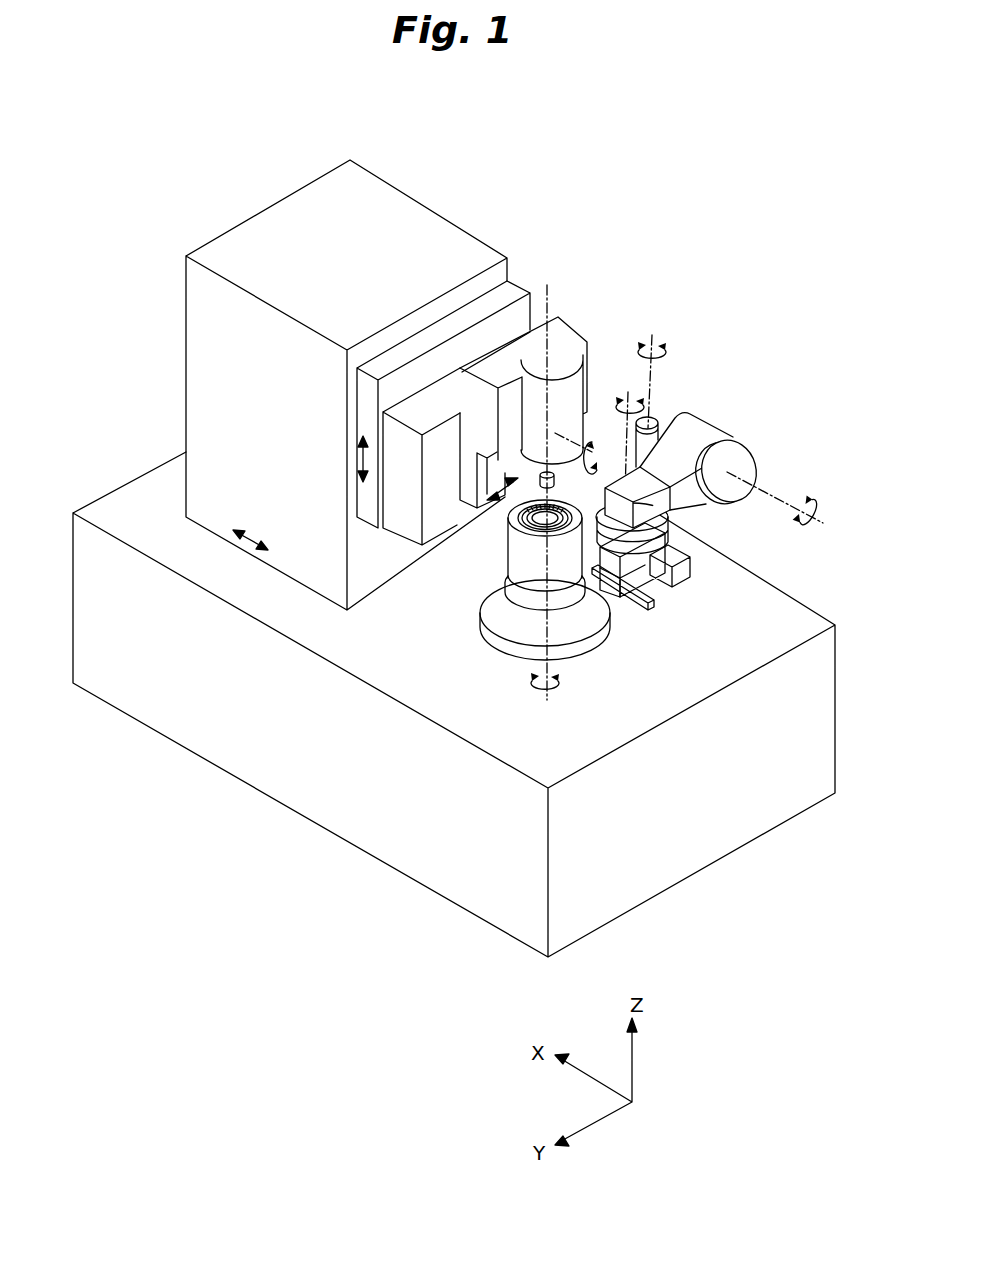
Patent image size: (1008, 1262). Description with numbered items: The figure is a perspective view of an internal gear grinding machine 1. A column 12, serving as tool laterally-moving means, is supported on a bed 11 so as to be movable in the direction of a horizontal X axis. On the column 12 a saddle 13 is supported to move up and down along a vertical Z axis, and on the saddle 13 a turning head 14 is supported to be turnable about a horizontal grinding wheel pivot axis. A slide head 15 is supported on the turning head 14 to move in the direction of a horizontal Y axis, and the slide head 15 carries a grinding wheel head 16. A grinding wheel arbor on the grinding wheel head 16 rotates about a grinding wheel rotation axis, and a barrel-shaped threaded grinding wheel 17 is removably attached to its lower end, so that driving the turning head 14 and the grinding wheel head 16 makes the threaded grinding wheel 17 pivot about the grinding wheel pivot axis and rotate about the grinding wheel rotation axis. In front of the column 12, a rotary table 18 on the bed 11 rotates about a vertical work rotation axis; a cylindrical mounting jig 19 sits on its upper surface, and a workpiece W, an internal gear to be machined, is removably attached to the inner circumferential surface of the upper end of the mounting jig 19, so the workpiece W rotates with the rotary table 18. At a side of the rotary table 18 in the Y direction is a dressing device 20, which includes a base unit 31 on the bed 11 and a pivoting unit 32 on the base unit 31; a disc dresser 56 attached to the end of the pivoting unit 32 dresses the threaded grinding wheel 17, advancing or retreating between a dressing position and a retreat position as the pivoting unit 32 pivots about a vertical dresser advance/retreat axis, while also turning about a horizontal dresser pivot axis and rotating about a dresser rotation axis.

The internal gear grinding machine 1 is at (700, 207).
The bed 11 is at (93, 510).
The column 12 is at (186, 322).
The saddle 13 is at (358, 497).
The turning head 14 is at (412, 528).
The slide head 15 is at (421, 534).
The grinding wheel head 16 is at (576, 388).
The threaded grinding wheel 17 is at (505, 499).
The rotary table 18 is at (509, 580).
The mounting jig 19 is at (563, 575).
The dressing device 20 is at (727, 435).
The base unit 31 is at (673, 553).
The pivoting unit 32 is at (697, 510).
The disc dresser 56 is at (728, 437).
The workpiece W is at (507, 527).